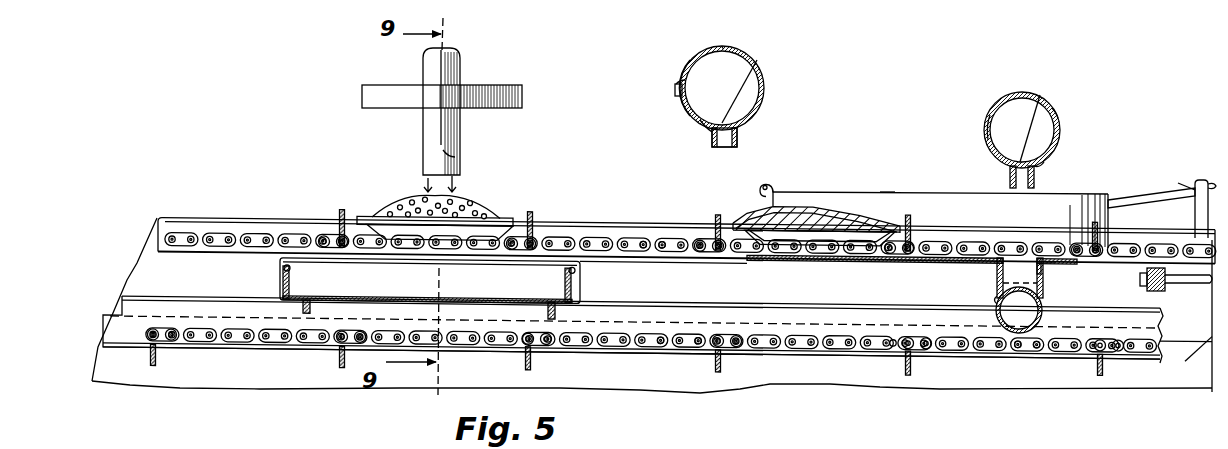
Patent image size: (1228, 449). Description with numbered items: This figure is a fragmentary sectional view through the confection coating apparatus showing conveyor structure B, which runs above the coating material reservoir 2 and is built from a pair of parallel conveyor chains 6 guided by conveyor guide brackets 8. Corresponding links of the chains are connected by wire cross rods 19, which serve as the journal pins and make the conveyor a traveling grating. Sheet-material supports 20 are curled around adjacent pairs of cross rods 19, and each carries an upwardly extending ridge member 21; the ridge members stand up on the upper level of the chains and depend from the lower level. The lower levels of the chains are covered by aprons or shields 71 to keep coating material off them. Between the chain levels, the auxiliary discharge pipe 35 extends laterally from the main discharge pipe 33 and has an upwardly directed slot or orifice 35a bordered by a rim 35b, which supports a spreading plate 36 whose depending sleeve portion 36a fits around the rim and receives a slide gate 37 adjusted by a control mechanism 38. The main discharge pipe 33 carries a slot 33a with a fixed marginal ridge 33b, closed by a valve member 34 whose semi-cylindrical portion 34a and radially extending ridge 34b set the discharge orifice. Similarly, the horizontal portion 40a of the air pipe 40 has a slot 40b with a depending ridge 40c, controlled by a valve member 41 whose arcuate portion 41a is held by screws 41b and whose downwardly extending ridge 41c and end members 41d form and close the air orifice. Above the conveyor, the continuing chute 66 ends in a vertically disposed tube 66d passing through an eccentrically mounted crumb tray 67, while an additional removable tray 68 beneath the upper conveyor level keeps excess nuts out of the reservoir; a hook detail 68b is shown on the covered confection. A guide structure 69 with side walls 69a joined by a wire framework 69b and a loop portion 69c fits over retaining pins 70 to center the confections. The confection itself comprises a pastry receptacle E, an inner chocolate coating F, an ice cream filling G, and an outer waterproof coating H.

The coating material reservoir 2 is at (150, 276).
The conveyor chains 6 is at (192, 240).
The conveyor guide brackets 8 is at (160, 228).
The conveyor chain aprons or shields 71 is at (125, 306).
The ridge member 21 is at (556, 196).
The tray 68 is at (466, 296).
The continuing chute 66 is at (462, 74).
The tray 67 is at (522, 97).
The vertically disposed tube 66d is at (455, 157).
The air pipe 40 is at (764, 78).
The horizontal portion of the air pipe 40a is at (738, 42).
The slot 40b is at (755, 82).
The depending ridge 40c is at (738, 140).
The valve member 41 is at (687, 108).
The arcuate portion 41a is at (675, 92).
The screws 41b is at (677, 85).
The downwardly extending ridge 41c is at (712, 138).
The end members 41d is at (722, 147).
The main discharge pipe 33 is at (1052, 128).
The slot 33a is at (1040, 95).
The marginal ridge 33b is at (1010, 178).
The valve member 34 is at (987, 128).
The semi-cylindrical portion 34a is at (1058, 110).
The radially extending ridge 34b is at (1038, 170).
The cover hook 68b is at (823, 206).
The guide structure 69 is at (856, 193).
The side walls 69a is at (887, 200).
The wire or rod framework 69b is at (1132, 195).
The loop portion 69c is at (1178, 183).
The retaining pins 70 is at (1199, 180).
The auxiliary discharge pipe 35 is at (1043, 310).
The slot or orifice 35a is at (1000, 302).
The rim 35b is at (1003, 270).
The spreading plate 36 is at (997, 262).
The sleeve portion 36a is at (1045, 272).
The slide gate 37 is at (1146, 285).
The control mechanism 38 is at (1170, 284).
The cross rods 19 is at (643, 247).
The supports 20 is at (893, 336).
The outer coating H is at (823, 205).
The ice cream or frozen confection G is at (770, 250).
The inside coating F is at (784, 250).
The receptacle E is at (797, 250).